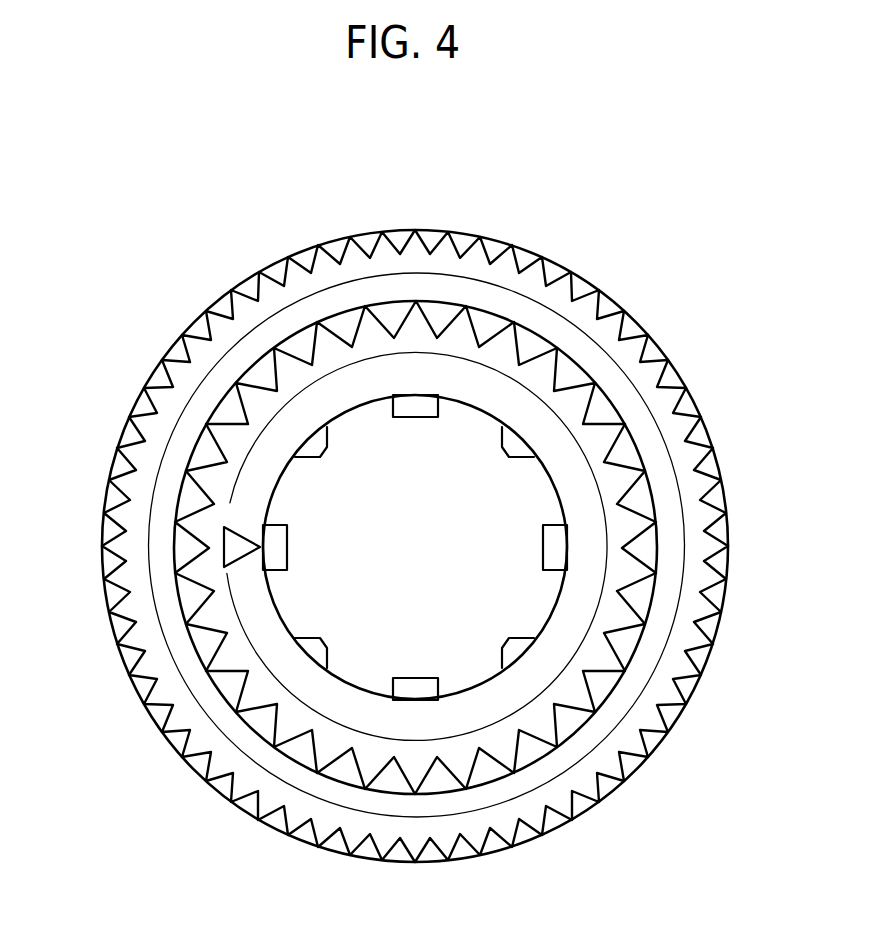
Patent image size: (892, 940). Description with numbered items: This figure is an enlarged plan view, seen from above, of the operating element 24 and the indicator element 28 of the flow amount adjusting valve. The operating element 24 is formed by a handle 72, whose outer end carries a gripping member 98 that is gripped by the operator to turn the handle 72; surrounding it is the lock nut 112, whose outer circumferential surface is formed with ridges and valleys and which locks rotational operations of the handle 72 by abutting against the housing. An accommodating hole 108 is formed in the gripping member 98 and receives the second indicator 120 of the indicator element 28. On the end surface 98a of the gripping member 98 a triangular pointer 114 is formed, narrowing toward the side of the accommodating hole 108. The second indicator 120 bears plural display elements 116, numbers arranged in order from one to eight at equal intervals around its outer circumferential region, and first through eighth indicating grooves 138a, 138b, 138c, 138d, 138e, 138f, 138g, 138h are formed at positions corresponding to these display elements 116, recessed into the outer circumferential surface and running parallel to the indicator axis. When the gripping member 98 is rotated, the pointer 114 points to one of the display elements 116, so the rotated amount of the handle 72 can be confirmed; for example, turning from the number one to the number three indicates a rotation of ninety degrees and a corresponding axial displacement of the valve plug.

The operating element 24 is at (582, 265).
The indicator element 28 is at (417, 548).
The handle 72 is at (358, 775).
The gripping member 98 is at (330, 743).
The end surface 98a is at (417, 464).
The accommodating hole 108 is at (549, 500).
The lock nut 112 is at (177, 368).
The pointer 114 is at (230, 600).
The display elements 116 is at (368, 400).
The second indicator 120 is at (482, 673).
The first indicating groove 138a is at (263, 547).
The second indicating groove 138b is at (317, 652).
The third indicating groove 138c is at (417, 690).
The fourth indicating groove 138d is at (518, 648).
The fifth indicating groove 138e is at (556, 545).
The sixth indicating groove 138f is at (513, 443).
The seventh indicating groove 138g is at (412, 405).
The eighth indicating groove 138h is at (317, 447).